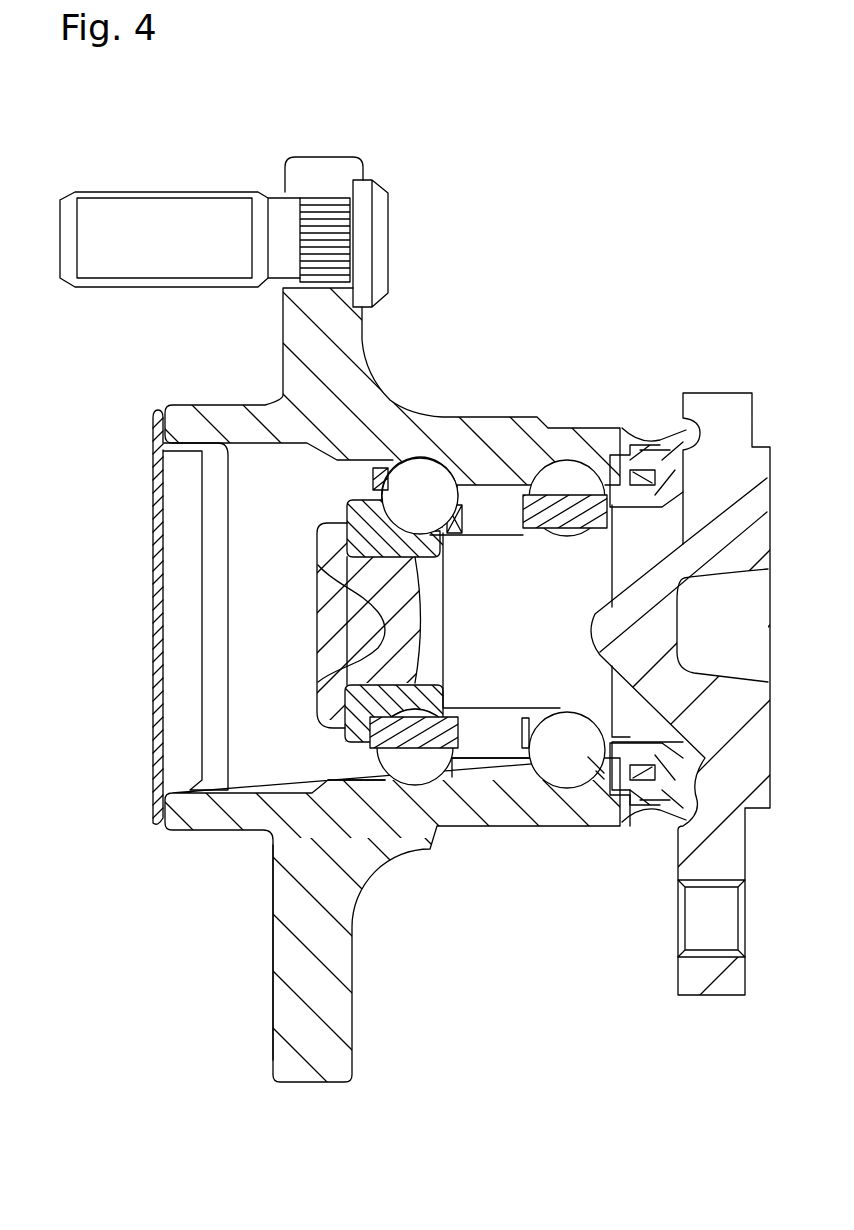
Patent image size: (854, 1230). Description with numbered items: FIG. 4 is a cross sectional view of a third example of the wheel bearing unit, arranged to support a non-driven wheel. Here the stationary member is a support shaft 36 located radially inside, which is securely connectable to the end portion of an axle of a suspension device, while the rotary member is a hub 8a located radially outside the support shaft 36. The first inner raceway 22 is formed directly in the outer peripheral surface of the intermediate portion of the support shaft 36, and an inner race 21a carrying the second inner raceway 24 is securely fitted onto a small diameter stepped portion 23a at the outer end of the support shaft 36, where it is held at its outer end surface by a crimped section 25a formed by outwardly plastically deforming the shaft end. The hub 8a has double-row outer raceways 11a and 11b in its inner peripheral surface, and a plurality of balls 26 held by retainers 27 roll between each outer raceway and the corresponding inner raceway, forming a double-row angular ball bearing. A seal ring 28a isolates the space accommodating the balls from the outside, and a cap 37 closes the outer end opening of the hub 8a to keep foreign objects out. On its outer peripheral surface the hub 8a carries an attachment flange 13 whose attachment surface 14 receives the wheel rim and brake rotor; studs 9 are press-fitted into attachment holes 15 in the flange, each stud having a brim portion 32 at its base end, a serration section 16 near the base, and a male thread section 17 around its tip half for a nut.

The hub 8a is at (500, 440).
The stud 9 is at (192, 223).
The male thread section 17 is at (157, 192).
The attachment hole 15 is at (320, 245).
The serration section 16 is at (363, 247).
The brim portion 32 is at (383, 220).
The attachment flange 13 is at (313, 993).
The attachment surface 14 is at (270, 910).
The support shaft 36 is at (502, 660).
The second inner raceway 24 is at (412, 515).
The inner race 21a is at (360, 525).
The crimped section 25a is at (332, 548).
The small diameter stepped portion 23a is at (330, 693).
The outer raceway 11a is at (552, 778).
The outer raceway 11b is at (414, 785).
The ball 26 is at (440, 478).
The retainer 27 is at (547, 522).
The first inner raceway 22 is at (582, 717).
The seal ring 28a is at (652, 465).
The cap 37 is at (152, 690).